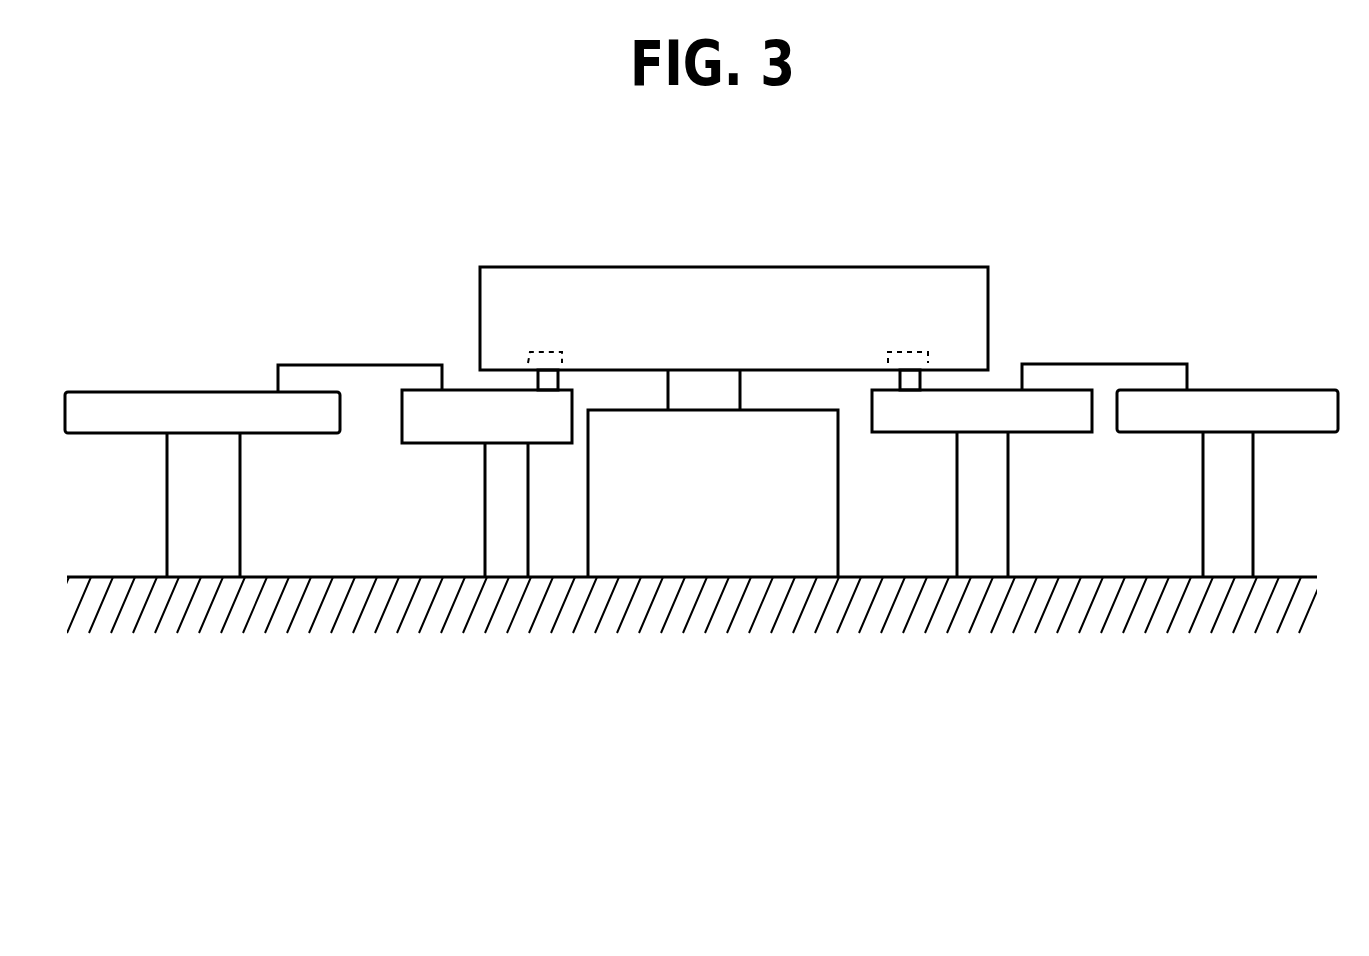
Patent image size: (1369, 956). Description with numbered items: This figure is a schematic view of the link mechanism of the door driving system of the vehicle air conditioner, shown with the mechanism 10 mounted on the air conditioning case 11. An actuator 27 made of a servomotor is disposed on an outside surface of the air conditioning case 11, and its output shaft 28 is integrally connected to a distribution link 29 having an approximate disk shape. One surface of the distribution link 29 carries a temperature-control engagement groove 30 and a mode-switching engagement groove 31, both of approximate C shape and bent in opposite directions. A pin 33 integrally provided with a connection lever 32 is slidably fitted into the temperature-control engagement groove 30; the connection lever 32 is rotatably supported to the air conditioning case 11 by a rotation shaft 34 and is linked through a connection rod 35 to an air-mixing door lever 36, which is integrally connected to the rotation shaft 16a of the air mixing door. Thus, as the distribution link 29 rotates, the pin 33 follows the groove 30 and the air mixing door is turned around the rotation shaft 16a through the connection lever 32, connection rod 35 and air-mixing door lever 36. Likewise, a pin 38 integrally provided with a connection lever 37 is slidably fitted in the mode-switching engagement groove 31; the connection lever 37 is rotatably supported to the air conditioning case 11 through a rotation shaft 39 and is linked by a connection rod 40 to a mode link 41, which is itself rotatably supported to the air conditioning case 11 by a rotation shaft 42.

The air conditioning unit case 10 is at (107, 575).
The air conditioning case 11 is at (145, 612).
The rotation shaft 16a is at (1256, 530).
The actuator 27 is at (840, 532).
The output shaft 28 is at (742, 380).
The distribution link 29 is at (900, 267).
The temperature-control engagement groove 30 is at (930, 359).
The mode-switching engagement groove 31 is at (528, 359).
The connection lever 32 is at (993, 390).
The pin 33 is at (900, 378).
The rotation shaft 34 is at (1010, 532).
The connection rod 35 is at (1142, 364).
The air-mixing door lever 36 is at (1290, 390).
The connection lever 37 is at (424, 443).
The pin 38 is at (560, 378).
The rotation shaft 39 is at (483, 533).
The connection rod 40 is at (343, 365).
The mode link 41 is at (110, 392).
The rotation shaft 42 is at (242, 530).